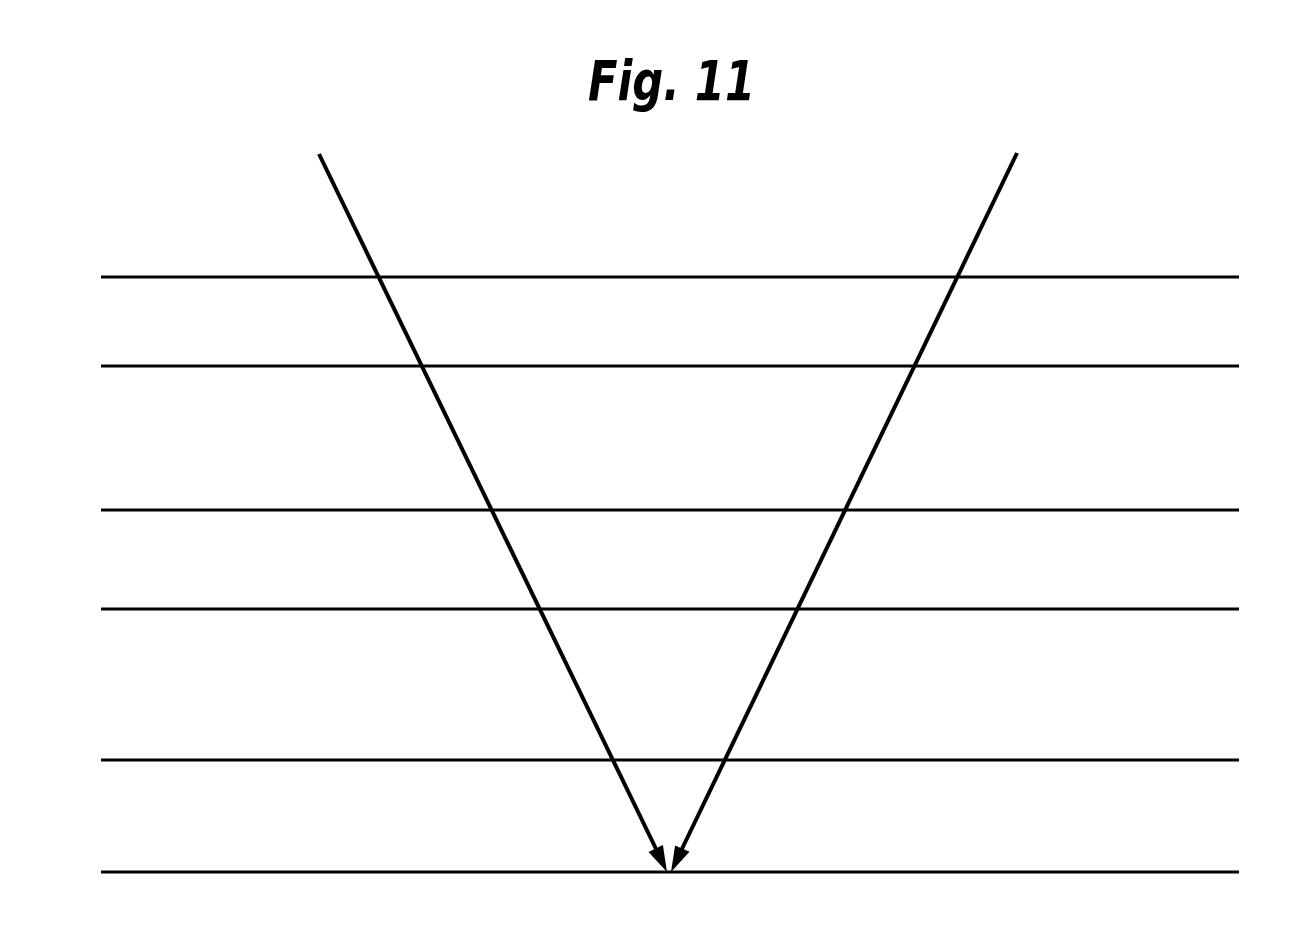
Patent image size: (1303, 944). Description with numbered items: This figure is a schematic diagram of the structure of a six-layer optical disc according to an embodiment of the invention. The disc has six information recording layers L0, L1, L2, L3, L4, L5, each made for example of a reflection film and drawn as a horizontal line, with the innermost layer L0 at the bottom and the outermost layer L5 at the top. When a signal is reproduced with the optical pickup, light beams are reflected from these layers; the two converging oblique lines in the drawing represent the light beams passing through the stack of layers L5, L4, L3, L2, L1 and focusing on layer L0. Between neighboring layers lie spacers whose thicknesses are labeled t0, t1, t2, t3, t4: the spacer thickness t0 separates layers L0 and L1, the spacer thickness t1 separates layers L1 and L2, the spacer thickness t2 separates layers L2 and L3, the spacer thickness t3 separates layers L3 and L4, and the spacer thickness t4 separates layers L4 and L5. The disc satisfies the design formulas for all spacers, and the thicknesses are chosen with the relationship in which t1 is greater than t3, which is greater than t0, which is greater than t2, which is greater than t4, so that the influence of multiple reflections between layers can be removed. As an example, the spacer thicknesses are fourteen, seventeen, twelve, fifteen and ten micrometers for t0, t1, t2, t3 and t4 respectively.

The information recording layer L5 is at (691, 277).
The information recording layer L4 is at (691, 366).
The information recording layer L3 is at (691, 510).
The information recording layer L2 is at (691, 609).
The information recording layer L1 is at (691, 760).
The information recording layer L0 is at (691, 872).
The spacer thickness t4 is at (78, 326).
The spacer thickness t3 is at (78, 442).
The spacer thickness t2 is at (78, 562).
The spacer thickness t1 is at (78, 690).
The spacer thickness t0 is at (78, 821).